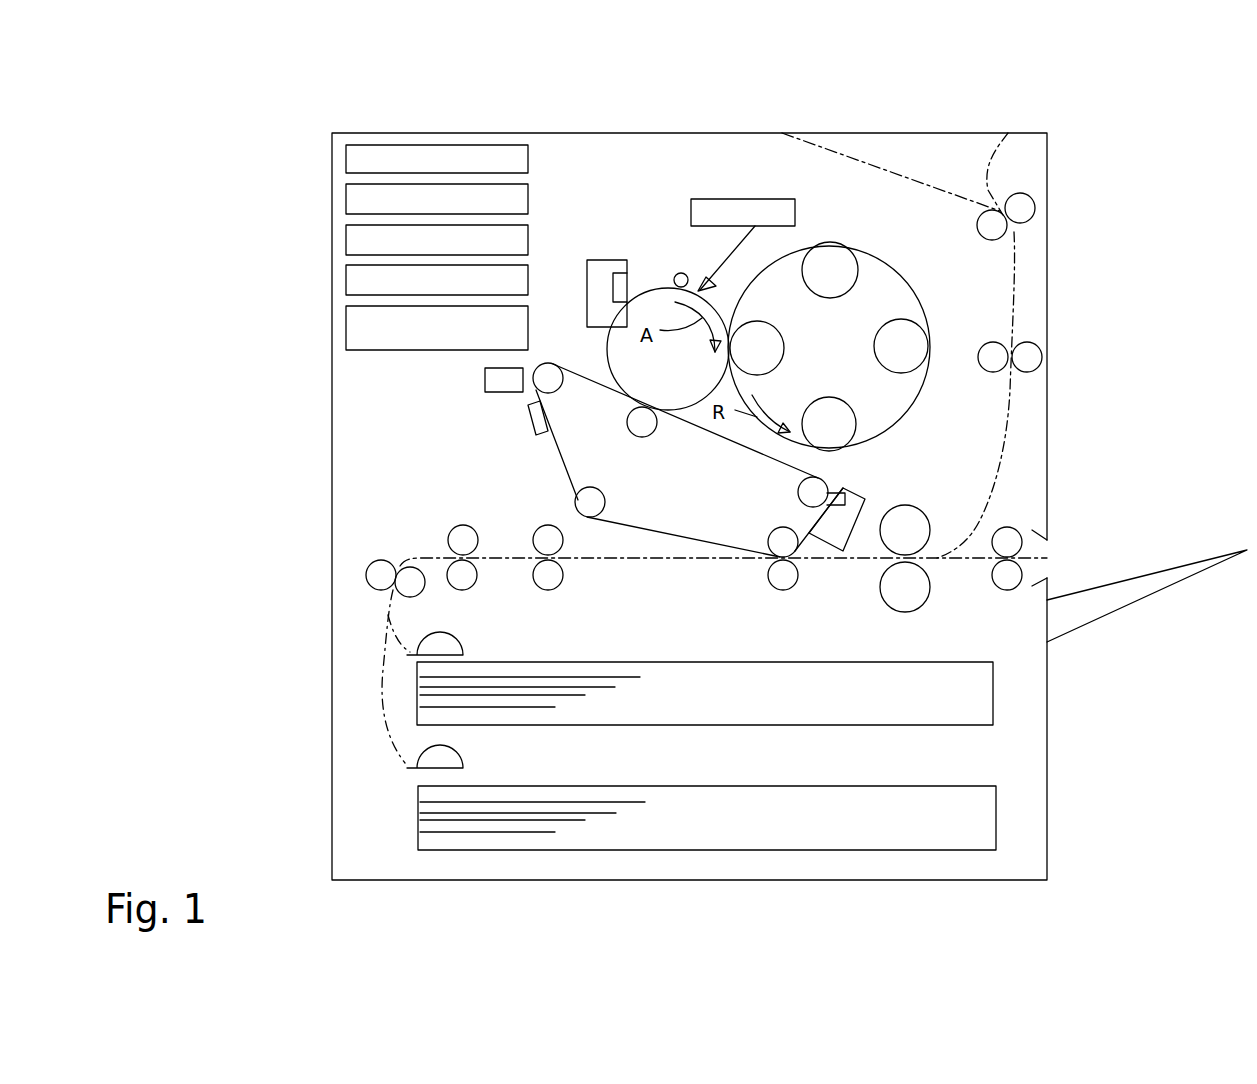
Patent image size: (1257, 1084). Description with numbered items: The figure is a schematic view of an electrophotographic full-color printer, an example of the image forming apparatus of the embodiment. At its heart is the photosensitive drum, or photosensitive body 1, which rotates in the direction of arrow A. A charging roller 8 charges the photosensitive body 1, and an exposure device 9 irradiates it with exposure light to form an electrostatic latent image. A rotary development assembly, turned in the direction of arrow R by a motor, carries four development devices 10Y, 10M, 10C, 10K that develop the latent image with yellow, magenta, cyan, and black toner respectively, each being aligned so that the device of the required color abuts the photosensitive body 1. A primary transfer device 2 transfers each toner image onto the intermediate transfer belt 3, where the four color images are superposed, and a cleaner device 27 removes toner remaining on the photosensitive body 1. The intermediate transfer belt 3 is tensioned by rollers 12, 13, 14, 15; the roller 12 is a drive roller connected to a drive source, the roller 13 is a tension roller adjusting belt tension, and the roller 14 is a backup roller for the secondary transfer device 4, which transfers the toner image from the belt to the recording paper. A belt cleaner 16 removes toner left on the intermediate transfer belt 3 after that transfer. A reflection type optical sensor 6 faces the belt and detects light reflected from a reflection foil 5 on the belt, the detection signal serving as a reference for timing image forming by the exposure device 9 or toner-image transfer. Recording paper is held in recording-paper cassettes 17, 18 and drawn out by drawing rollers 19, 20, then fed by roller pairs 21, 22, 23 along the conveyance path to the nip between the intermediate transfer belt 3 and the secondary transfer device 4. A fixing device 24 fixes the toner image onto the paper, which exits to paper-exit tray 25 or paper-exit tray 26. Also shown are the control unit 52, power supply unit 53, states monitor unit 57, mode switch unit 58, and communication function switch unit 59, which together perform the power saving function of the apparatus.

The photosensitive drum 1 is at (622, 368).
The primary transfer device 2 is at (650, 434).
The intermediate transfer belt 3 is at (558, 462).
The secondary transfer device 4 is at (768, 577).
The reflection foil 5 is at (527, 424).
The reflection type optical sensor 6 is at (485, 382).
The charging roller 8 is at (676, 274).
The exposure device 9 is at (733, 198).
The development device 10M is at (843, 272).
The development device 10C is at (905, 325).
The development device 10Y is at (758, 347).
The development device 10K is at (838, 418).
The drive roller 12 is at (548, 362).
The tension roller 13 is at (605, 500).
The backup roller 14 is at (768, 536).
The roller 15 is at (797, 492).
The belt cleaner 16 is at (863, 498).
The recording-paper cassette 17 is at (808, 660).
The recording-paper cassette 18 is at (763, 786).
The drawing roller 19 is at (455, 630).
The drawing roller 20 is at (463, 755).
The roller pair 21 is at (373, 590).
The roller pair 22 is at (458, 520).
The roller pair 23 is at (560, 592).
The fixing device 24 is at (942, 602).
The paper-exit tray 25 is at (1117, 578).
The paper-exit tray 26 is at (883, 170).
The cleaner device 27 is at (603, 260).
The control unit 52 is at (346, 160).
The power supply unit 53 is at (346, 201).
The states monitor unit 57 is at (346, 241).
The mode switch unit 58 is at (346, 282).
The communication function switch unit 59 is at (346, 322).